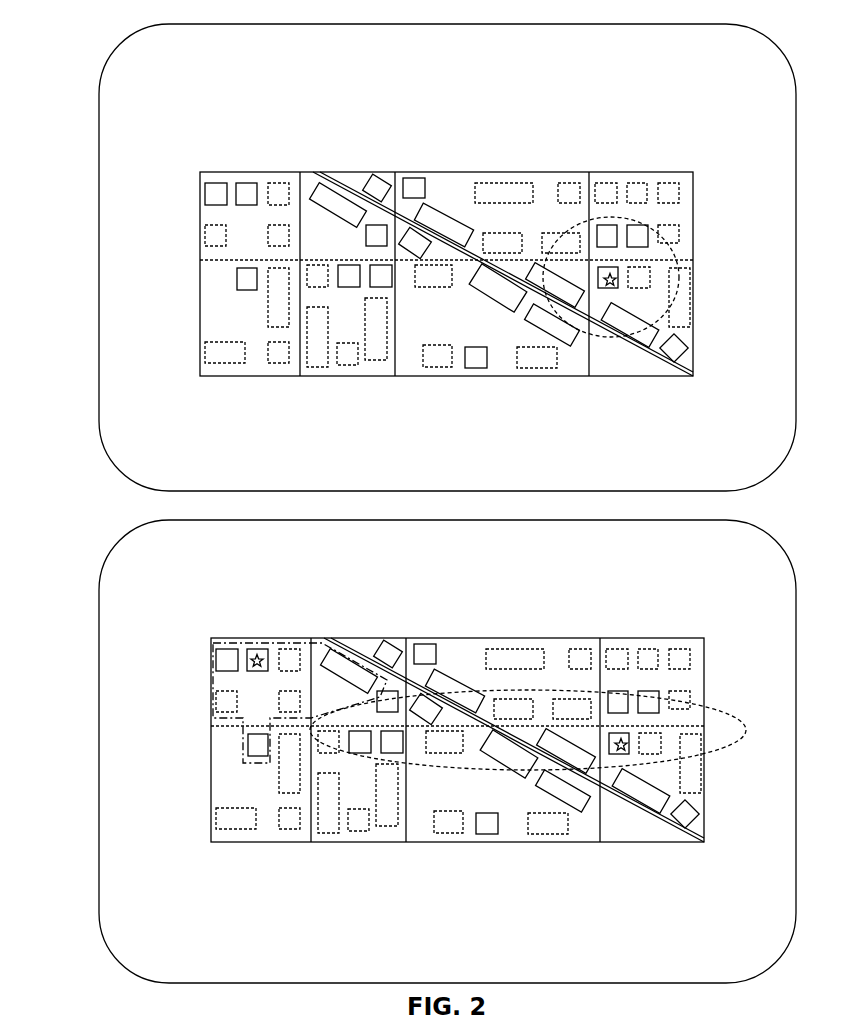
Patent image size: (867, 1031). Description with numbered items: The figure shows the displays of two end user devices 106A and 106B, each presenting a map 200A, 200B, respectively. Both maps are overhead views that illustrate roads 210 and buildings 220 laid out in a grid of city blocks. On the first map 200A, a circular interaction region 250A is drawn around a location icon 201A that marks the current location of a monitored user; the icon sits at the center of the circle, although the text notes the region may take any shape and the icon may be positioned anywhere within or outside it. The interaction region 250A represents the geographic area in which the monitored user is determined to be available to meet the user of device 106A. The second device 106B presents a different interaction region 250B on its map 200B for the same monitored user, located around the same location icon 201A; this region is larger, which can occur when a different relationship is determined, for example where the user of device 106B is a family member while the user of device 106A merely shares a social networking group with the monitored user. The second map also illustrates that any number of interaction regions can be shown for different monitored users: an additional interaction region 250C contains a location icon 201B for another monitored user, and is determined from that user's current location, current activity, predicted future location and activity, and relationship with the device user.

The end user device 106A is at (99, 357).
The end user device 106B is at (135, 521).
The map 200A is at (630, 130).
The map 200B is at (588, 617).
The roads 210 is at (349, 171).
The buildings 220 is at (520, 172).
The interaction region 250A is at (672, 251).
The interaction region 250B is at (718, 752).
The interaction region 250C is at (322, 643).
The location icon 201A is at (612, 283).
The location icon 201B is at (257, 655).